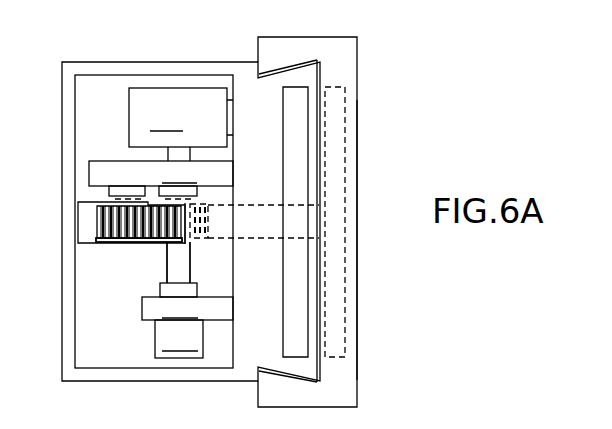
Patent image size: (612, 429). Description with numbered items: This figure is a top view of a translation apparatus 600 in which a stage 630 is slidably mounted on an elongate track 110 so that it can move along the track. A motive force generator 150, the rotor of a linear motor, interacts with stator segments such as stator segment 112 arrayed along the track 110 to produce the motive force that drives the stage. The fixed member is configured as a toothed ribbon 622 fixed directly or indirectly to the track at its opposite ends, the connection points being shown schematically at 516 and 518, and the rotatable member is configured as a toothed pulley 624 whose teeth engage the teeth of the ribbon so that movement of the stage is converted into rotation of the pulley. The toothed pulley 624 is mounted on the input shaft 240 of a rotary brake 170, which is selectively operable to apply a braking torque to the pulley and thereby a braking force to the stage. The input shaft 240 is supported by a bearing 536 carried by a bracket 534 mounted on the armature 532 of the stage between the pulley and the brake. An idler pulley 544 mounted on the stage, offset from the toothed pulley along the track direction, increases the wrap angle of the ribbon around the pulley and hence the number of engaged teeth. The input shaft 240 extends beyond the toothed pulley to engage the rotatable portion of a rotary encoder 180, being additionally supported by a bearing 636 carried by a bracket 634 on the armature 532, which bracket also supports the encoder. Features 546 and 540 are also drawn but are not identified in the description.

The translation apparatus 600 is at (206, 44).
The stage 630 is at (104, 58).
The armature 532 is at (233, 363).
The rotary brake 170 is at (178, 117).
The input shaft 240 is at (167, 155).
The bracket 534 is at (161, 178).
The magnetic ring 546 is at (112, 197).
The stator 540 is at (78, 203).
The connection point 518 is at (90, 232).
The idler pulley 544 is at (160, 283).
The toothed ribbon 622 is at (115, 243).
The toothed pulley 624 is at (165, 245).
The bearing 636 is at (160, 296).
The bracket 634 is at (187, 308).
The rotary encoder 180 is at (179, 339).
The connection point 516 is at (256, 228).
The bearing 536 is at (193, 197).
The motive force generator 150 is at (308, 87).
The stator segment 112 is at (345, 215).
The track 110 is at (357, 195).